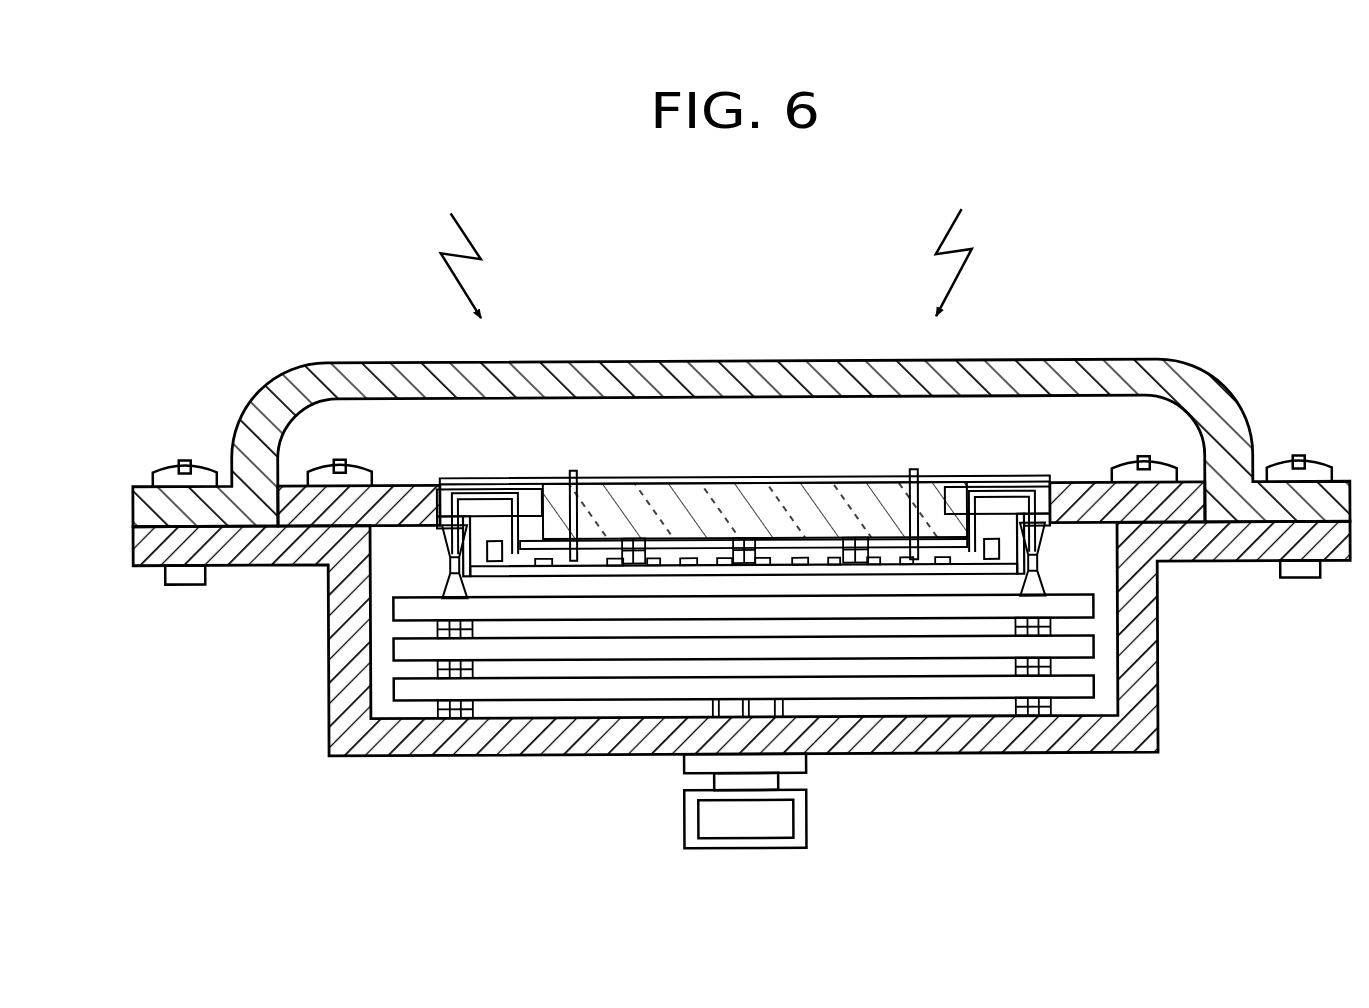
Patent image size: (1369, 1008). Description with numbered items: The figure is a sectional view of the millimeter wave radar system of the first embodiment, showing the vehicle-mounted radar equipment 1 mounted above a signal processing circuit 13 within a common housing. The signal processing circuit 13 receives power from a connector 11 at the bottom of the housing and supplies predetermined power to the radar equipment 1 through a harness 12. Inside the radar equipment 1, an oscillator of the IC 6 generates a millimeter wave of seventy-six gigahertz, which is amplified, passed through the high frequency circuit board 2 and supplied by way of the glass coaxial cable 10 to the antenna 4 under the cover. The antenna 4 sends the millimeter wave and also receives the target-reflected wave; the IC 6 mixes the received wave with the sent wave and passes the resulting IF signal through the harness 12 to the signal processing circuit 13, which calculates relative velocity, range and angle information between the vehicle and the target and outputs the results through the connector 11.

The radar equipment 1 is at (1037, 555).
The high frequency circuit board 2 is at (790, 540).
The antenna 4 is at (1000, 477).
The IC 6 is at (853, 540).
The glass coaxial cable 10 is at (543, 483).
The connector 11 is at (805, 820).
The harness 12 is at (450, 562).
The signal processing circuit 13 is at (1093, 645).